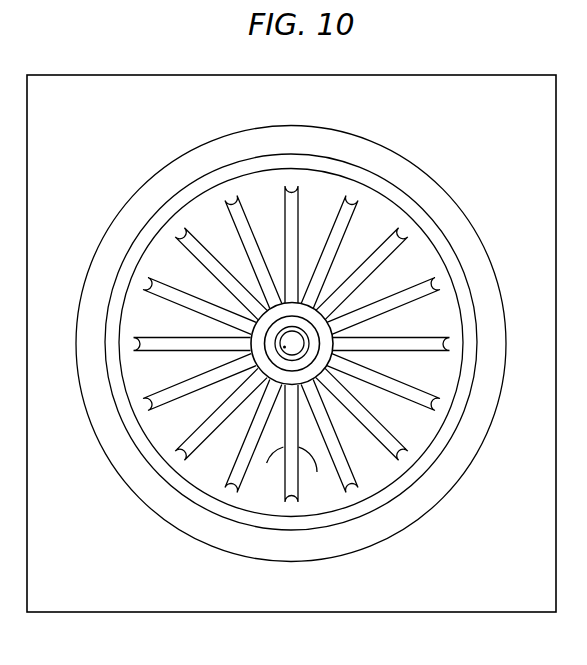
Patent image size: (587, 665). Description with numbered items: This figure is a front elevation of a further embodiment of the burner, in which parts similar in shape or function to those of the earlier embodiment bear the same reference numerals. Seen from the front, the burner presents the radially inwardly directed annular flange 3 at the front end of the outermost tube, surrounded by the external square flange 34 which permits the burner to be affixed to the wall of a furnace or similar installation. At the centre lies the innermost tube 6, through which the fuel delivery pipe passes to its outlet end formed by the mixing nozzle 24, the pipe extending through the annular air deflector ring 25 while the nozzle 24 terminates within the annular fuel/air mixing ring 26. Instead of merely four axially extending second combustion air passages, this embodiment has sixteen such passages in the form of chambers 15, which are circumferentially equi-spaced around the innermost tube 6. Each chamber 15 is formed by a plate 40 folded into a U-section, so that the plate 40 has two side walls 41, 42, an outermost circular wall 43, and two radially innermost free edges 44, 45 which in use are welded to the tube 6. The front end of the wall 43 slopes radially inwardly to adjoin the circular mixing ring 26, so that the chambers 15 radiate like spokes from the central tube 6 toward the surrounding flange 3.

The external square flange 34 is at (88, 131).
The annular flange 3 is at (215, 147).
The plate 40 is at (362, 203).
The mixing nozzle 24 is at (297, 340).
The chambers 15 is at (349, 190).
The innermost tube 6 is at (249, 256).
The annular air deflector ring 25 is at (318, 284).
The annular fuel/air mixing ring 26 is at (364, 320).
The radially innermost free edge 44 is at (272, 396).
The radially innermost free edge 45 is at (312, 396).
The outermost circular wall 43 is at (293, 508).
The side wall 41 is at (267, 473).
The side wall 42 is at (319, 473).